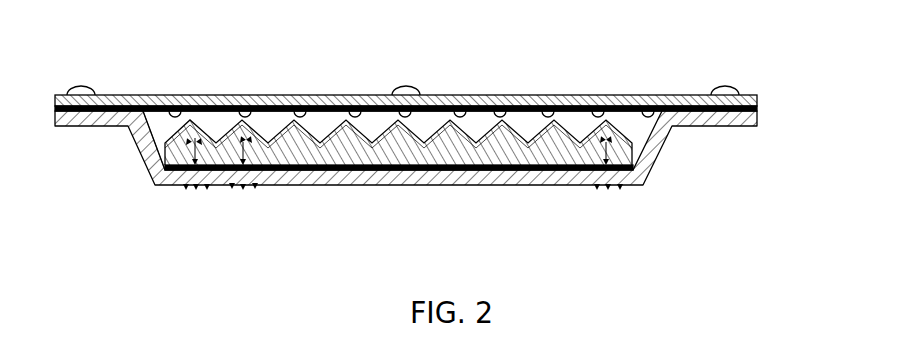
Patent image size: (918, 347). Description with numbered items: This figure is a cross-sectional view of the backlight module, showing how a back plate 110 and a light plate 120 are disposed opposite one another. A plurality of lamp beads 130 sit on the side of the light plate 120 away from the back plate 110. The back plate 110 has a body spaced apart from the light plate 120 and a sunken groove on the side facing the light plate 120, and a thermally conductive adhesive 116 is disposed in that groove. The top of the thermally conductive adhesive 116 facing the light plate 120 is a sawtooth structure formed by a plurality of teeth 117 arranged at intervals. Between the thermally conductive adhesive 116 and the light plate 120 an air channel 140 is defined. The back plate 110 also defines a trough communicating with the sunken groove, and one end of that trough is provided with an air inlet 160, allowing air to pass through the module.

The back plate 110 is at (655, 167).
The thermally conductive adhesive 116 is at (493, 168).
The teeth 117 is at (297, 122).
The light plate 120 is at (617, 97).
The lamp beads 130 is at (726, 86).
The air channel 140 is at (171, 117).
The air inlet 160 is at (455, 114).